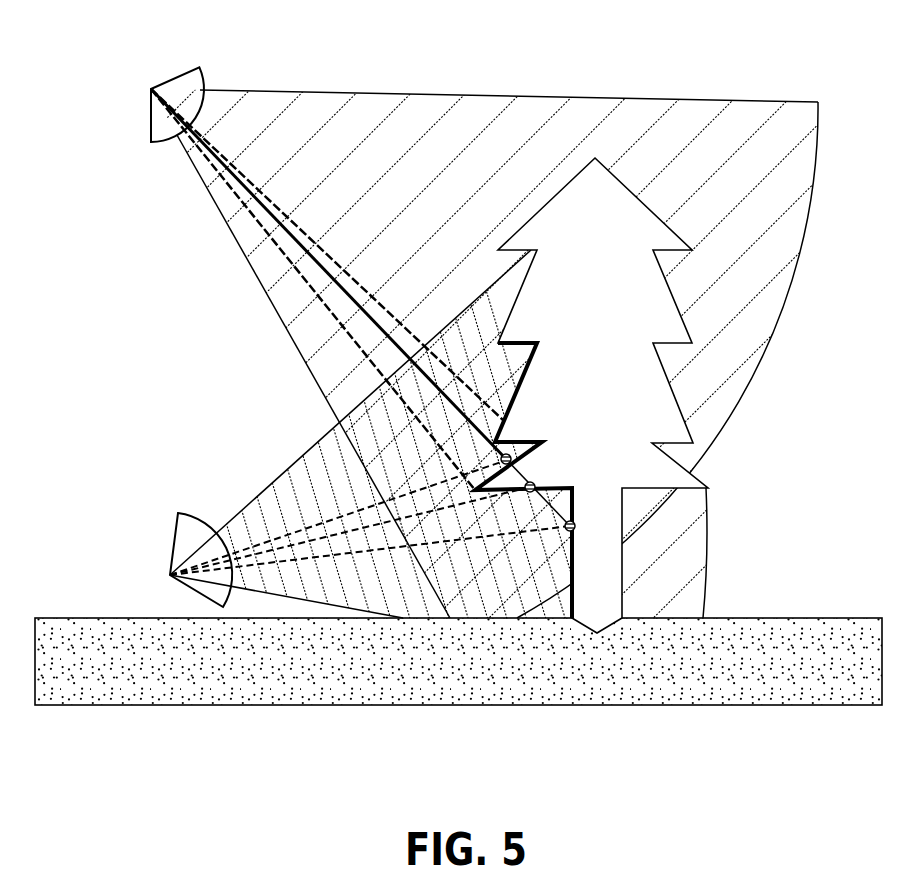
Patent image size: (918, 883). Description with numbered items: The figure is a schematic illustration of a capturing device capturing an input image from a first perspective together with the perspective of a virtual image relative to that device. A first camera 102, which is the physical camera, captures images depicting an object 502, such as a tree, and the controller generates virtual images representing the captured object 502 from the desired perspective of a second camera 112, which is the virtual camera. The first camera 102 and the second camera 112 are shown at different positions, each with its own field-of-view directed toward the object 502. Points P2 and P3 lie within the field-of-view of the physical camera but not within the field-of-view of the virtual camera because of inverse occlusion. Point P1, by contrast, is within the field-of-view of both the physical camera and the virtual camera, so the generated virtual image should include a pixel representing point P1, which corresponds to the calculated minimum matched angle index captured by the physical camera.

The first camera 102 is at (183, 538).
The second camera 112 is at (178, 85).
The object 502 is at (618, 197).
The point P1 is at (488, 463).
The point P2 is at (546, 475).
The point P3 is at (588, 534).